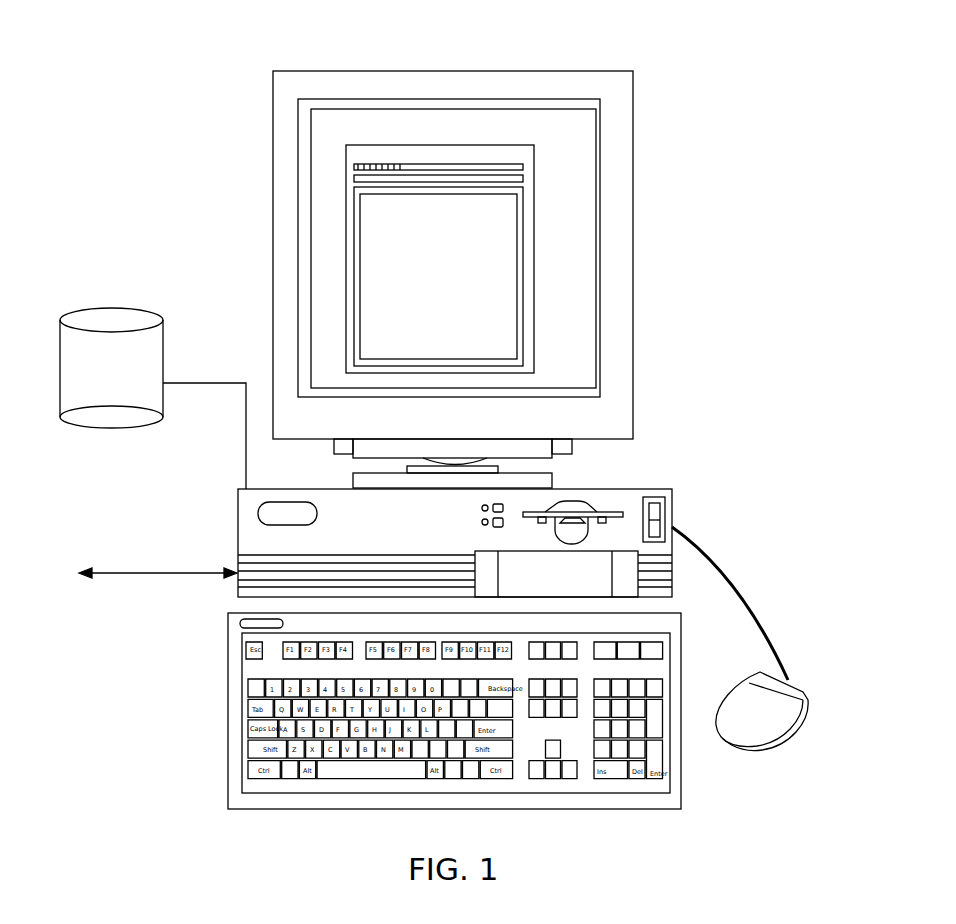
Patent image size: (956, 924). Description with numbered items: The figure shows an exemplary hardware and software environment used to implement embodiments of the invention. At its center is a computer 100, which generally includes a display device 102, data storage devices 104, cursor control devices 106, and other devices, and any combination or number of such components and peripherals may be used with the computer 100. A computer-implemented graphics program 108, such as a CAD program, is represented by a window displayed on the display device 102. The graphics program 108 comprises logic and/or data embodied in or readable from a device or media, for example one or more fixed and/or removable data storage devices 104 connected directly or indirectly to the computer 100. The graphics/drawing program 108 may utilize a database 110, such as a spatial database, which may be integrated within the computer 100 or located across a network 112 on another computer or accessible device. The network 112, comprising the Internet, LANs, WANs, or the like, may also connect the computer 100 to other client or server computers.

The computer 100 is at (684, 509).
The display device 102 is at (465, 60).
The data storage device 104 is at (604, 499).
The cursor control device 106 is at (739, 758).
The graphics program 108 is at (549, 157).
The database 110 is at (108, 428).
The network 112 is at (127, 575).